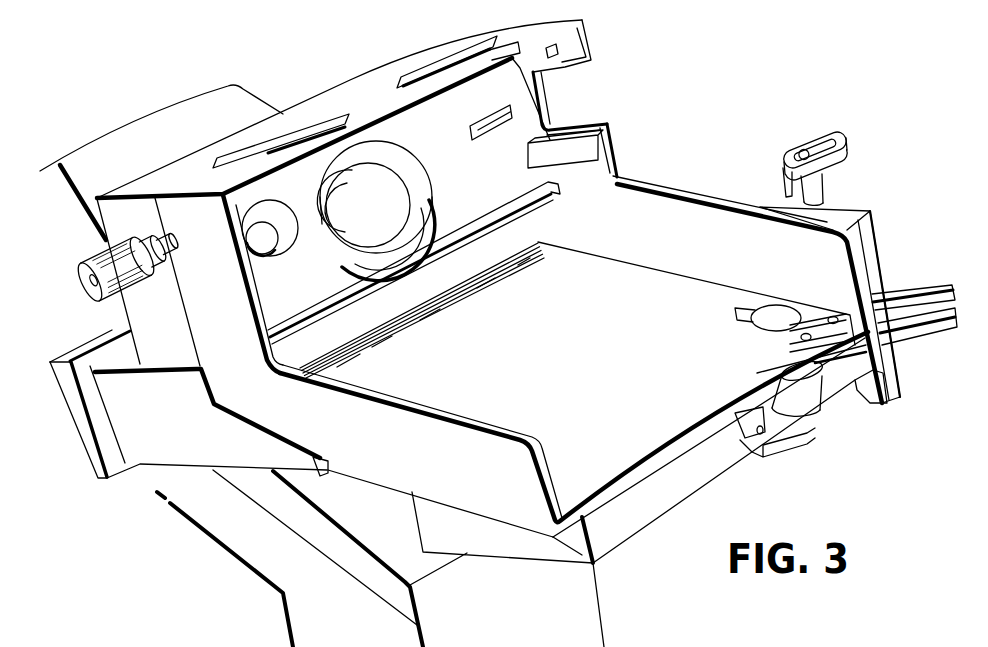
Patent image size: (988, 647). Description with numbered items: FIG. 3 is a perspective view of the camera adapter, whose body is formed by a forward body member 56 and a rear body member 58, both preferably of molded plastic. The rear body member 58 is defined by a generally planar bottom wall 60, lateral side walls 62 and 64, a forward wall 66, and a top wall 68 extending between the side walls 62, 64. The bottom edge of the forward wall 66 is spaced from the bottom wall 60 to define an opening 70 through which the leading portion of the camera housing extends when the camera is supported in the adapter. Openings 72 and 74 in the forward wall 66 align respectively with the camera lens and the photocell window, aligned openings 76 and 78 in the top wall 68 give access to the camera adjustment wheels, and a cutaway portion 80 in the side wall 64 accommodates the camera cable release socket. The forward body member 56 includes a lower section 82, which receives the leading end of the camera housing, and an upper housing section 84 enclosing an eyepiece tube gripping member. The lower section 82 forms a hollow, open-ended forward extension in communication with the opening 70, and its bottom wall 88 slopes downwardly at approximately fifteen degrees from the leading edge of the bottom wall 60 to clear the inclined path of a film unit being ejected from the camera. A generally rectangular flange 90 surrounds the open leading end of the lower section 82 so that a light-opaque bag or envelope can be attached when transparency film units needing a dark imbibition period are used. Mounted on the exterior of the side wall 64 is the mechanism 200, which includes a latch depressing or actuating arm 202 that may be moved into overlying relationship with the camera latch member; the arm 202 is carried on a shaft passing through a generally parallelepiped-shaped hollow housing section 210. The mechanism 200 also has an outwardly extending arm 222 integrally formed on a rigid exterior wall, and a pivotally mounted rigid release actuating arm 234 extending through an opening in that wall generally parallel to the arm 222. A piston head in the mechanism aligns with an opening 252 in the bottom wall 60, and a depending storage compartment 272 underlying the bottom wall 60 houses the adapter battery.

The forward body member 56 is at (374, 66).
The rear body member 58 is at (398, 494).
The bottom wall 60 is at (584, 494).
The lateral side wall 62 is at (380, 467).
The lateral side wall 64 is at (683, 200).
The forward wall 66 is at (538, 139).
The top wall 68 is at (548, 42).
The opening 70 is at (524, 217).
The opening 72 is at (392, 180).
The opening 74 is at (280, 220).
The opening 76 is at (433, 66).
The opening 78 is at (275, 145).
The cutaway portion 80 is at (544, 81).
The lower section 82 is at (141, 470).
The upper housing section 84 is at (132, 197).
The bottom wall 88 is at (200, 472).
The flange 90 is at (92, 468).
The mechanism 200 is at (860, 250).
The latch actuating arm 202 is at (826, 135).
The hollow housing section 210 is at (868, 228).
The arm 222 is at (915, 285).
The release actuating arm 234 is at (910, 350).
The opening 252 is at (748, 317).
The storage compartment 272 is at (548, 556).